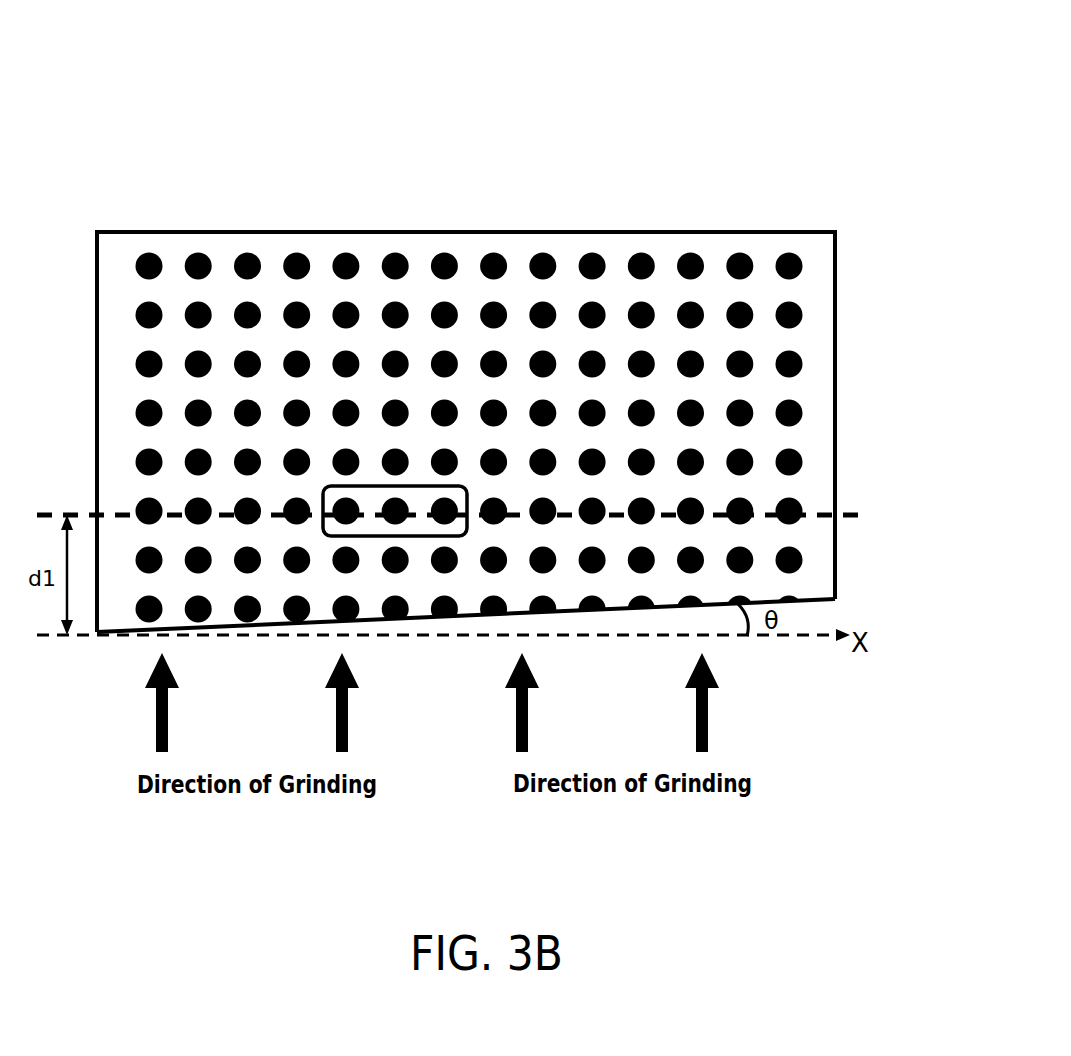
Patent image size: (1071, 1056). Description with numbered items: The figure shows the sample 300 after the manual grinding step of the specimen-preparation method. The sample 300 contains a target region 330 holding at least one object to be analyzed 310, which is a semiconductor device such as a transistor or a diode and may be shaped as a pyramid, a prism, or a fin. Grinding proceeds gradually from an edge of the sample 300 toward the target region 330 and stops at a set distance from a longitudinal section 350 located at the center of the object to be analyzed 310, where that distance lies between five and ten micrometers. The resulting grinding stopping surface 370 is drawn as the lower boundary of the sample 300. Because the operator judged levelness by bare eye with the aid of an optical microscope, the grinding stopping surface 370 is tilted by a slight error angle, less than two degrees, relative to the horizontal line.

The sample 300 is at (158, 105).
The object to be analyzed 310 is at (690, 254).
The target region 330 is at (380, 486).
The longitudinal section 350 is at (861, 508).
The grinding stopping surface 370 is at (812, 609).